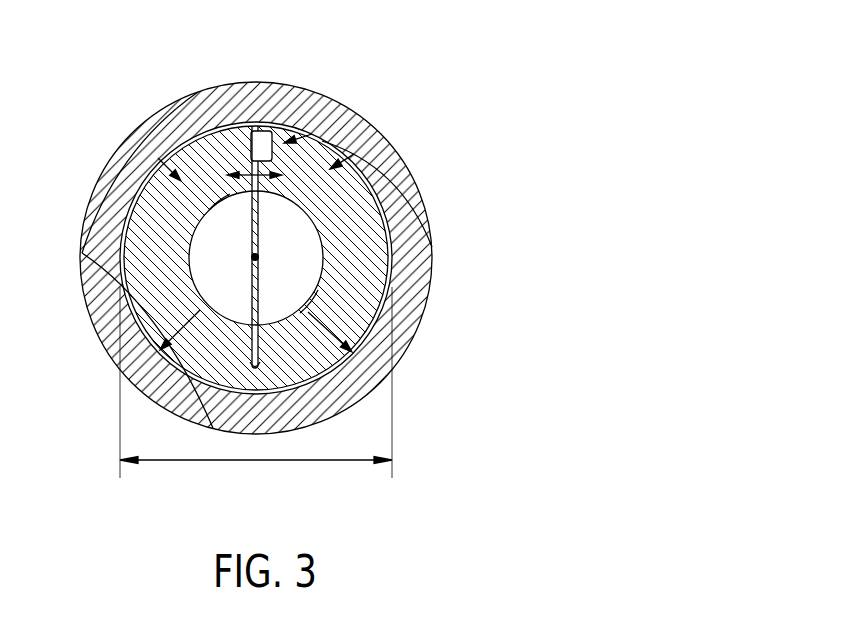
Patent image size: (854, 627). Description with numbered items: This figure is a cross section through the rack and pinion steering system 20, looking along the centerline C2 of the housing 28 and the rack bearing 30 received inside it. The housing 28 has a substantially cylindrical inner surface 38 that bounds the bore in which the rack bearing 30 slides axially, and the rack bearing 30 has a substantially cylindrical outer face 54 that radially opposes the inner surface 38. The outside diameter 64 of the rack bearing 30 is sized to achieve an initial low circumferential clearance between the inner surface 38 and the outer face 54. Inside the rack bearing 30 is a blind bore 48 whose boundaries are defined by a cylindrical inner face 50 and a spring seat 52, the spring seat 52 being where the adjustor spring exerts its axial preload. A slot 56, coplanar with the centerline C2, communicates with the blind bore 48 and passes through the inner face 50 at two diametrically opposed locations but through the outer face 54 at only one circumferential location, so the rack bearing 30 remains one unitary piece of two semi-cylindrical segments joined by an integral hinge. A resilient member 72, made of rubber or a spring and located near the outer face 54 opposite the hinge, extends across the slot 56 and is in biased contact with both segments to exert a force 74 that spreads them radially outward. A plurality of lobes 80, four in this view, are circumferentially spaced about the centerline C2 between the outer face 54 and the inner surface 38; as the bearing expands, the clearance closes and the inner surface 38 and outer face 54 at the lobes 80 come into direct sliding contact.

The rack and pinion steering system 20 is at (515, 59).
The housing 28 is at (341, 72).
The rack bearing 30 is at (409, 246).
The inner surface 38 is at (250, 345).
The bore 48 is at (236, 295).
The inner face 50 is at (227, 216).
The spring seat 52 is at (290, 278).
The outer face 54 is at (390, 276).
The slot 56 is at (257, 364).
The outside diameter 64 is at (247, 463).
The resilient member 72 is at (272, 133).
The force 74 is at (81, 255).
The lobes 80 is at (360, 152).
The centerline C2 is at (258, 257).